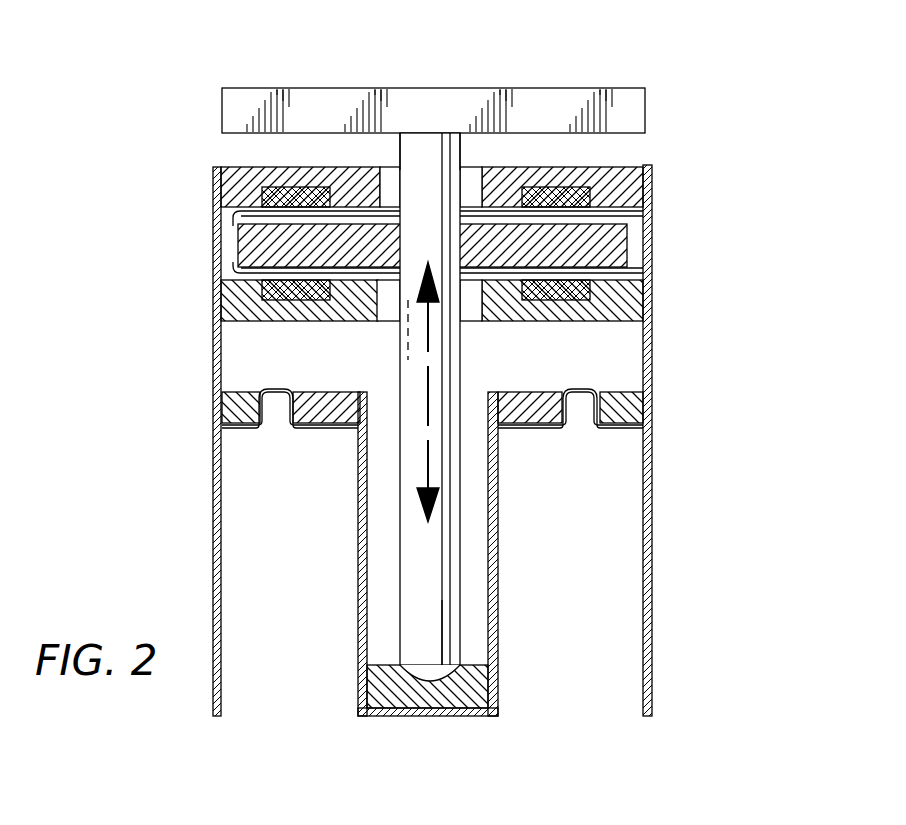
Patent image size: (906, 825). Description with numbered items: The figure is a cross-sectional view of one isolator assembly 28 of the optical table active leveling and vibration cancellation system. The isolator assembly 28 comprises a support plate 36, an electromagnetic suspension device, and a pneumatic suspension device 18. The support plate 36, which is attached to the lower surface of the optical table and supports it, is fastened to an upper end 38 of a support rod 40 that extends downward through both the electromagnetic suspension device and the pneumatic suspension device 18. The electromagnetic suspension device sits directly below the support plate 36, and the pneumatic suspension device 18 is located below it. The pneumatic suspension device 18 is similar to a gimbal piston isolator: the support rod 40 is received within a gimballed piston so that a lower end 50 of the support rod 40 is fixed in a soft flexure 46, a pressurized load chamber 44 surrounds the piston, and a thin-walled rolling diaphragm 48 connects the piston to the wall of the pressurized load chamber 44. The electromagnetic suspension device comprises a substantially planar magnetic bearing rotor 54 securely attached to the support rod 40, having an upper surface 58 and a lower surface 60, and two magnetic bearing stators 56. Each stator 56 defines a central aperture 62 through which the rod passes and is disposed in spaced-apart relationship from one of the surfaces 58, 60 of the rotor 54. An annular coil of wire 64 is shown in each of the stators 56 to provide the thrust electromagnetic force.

The pneumatic suspension device 18 is at (501, 440).
The isolator assembly 28 is at (684, 250).
The support plate 36 is at (632, 108).
The upper end 38 is at (440, 156).
The support rod 40 is at (432, 215).
The pressurized load chamber 44 is at (620, 520).
The soft flexure 46 is at (425, 682).
The thin-walled rolling diaphragm 48 is at (590, 385).
The lower end 50 is at (432, 636).
The magnetic bearing rotor 54 is at (247, 250).
The magnetic bearing stators 56 is at (222, 185).
The upper surface 58 is at (222, 218).
The lower surface 60 is at (225, 274).
The central aperture 62 is at (390, 316).
The annular coil of wire 64 is at (278, 296).